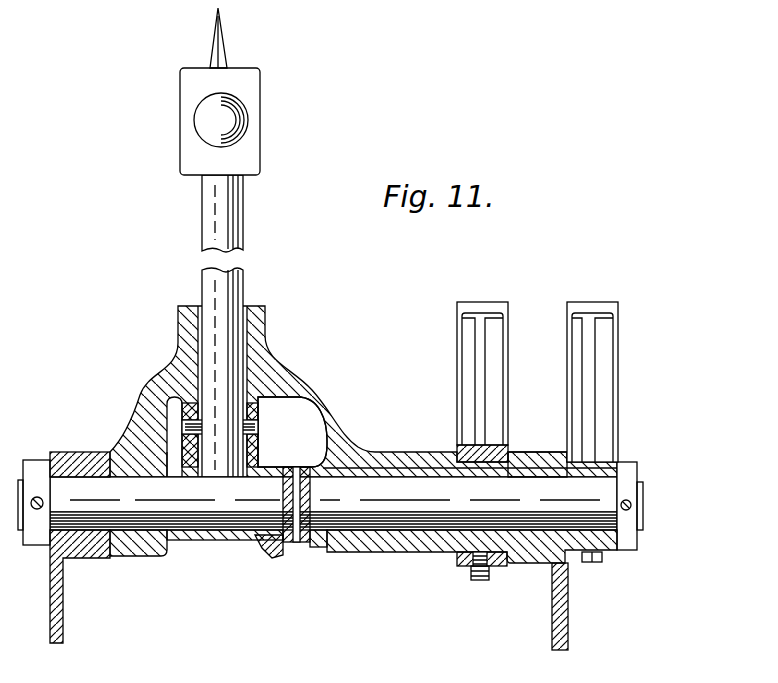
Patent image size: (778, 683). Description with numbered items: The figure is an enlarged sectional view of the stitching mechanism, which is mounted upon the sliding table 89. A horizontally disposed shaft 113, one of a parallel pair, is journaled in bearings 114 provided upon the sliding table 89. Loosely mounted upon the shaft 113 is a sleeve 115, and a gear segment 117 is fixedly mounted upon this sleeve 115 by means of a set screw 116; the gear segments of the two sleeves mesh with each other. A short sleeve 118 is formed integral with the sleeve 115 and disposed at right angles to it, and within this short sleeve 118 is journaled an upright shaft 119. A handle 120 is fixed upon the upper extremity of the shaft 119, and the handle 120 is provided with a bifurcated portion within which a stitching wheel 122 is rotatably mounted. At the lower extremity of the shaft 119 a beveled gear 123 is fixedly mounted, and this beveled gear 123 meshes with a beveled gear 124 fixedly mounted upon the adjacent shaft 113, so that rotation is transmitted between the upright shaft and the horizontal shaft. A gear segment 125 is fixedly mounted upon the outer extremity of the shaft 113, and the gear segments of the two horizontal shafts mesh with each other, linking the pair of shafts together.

The sliding table 89 is at (60, 612).
The shaft 113 is at (222, 512).
The bearing 114 is at (97, 548).
The sleeve 115 is at (398, 552).
The set screw 116 is at (470, 570).
The gear segment 117 is at (462, 385).
The short sleeve 118 is at (255, 350).
The shaft 119 is at (243, 293).
The handle 120 is at (233, 120).
The stitching wheel 122 is at (223, 50).
The beveled gear 123 is at (252, 447).
The beveled gear 124 is at (242, 547).
The gear segment 125 is at (600, 416).